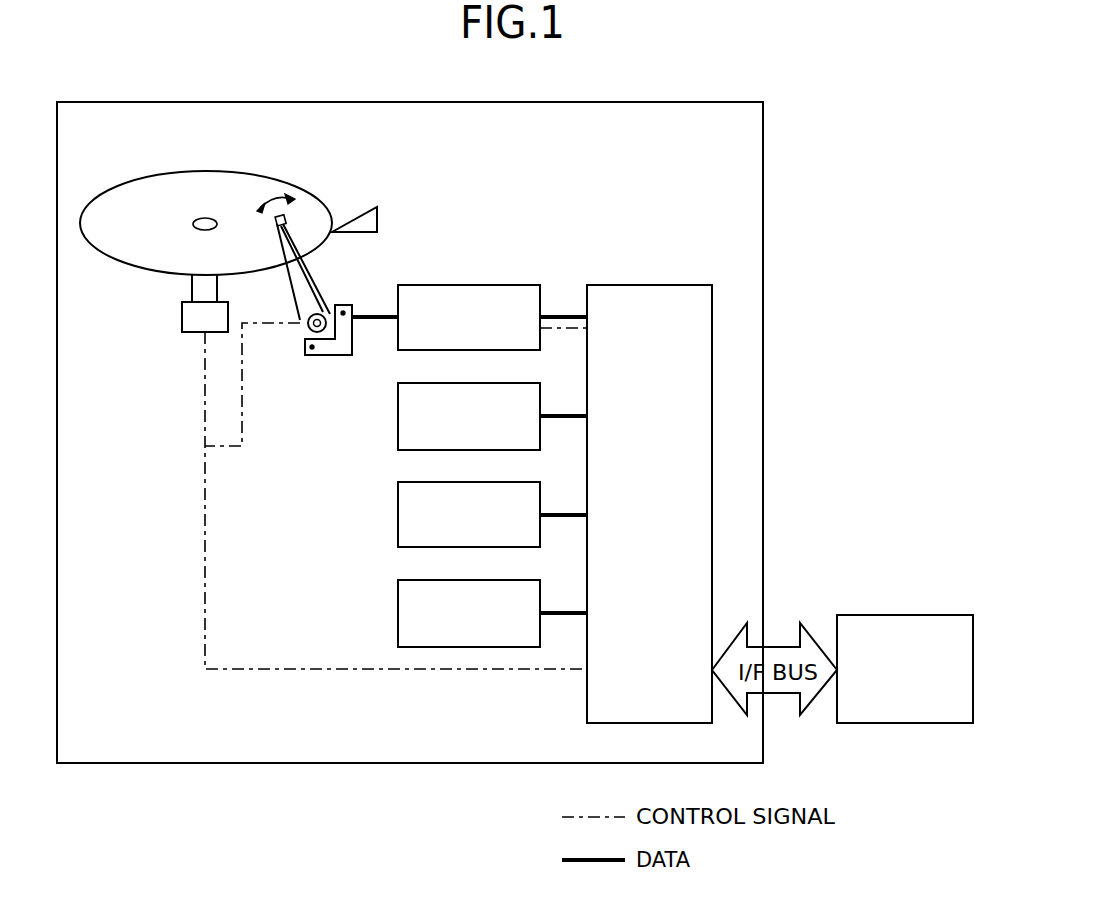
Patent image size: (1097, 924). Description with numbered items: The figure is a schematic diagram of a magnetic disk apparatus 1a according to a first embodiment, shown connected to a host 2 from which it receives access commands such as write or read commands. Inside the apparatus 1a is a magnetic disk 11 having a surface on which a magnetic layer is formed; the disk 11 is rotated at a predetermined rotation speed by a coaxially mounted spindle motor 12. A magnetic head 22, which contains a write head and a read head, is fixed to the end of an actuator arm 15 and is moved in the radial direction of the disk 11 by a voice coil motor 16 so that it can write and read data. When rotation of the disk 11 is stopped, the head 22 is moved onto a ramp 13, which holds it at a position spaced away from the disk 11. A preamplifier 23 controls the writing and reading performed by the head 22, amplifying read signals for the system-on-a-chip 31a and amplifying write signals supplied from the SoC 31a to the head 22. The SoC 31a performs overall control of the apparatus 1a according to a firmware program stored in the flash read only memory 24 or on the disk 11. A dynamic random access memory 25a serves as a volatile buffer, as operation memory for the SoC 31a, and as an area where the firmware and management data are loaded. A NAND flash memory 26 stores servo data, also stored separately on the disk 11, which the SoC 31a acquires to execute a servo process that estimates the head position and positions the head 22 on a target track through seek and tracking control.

The magnetic disk apparatus 1a is at (690, 86).
The magnetic disk 11 is at (255, 180).
The spindle motor 12 is at (188, 318).
The ramp 13 is at (373, 220).
The actuator arm 15 is at (318, 290).
The voice coil motor 16 is at (330, 347).
The magnetic head 22 is at (287, 218).
The preamplifier 23 is at (480, 268).
The flash read only memory 24 is at (480, 366).
The dynamic random access memory 25a is at (480, 465).
The NAND flash memory 26 is at (480, 563).
The system-on-a-chip 31a is at (668, 268).
The host 2 is at (912, 600).